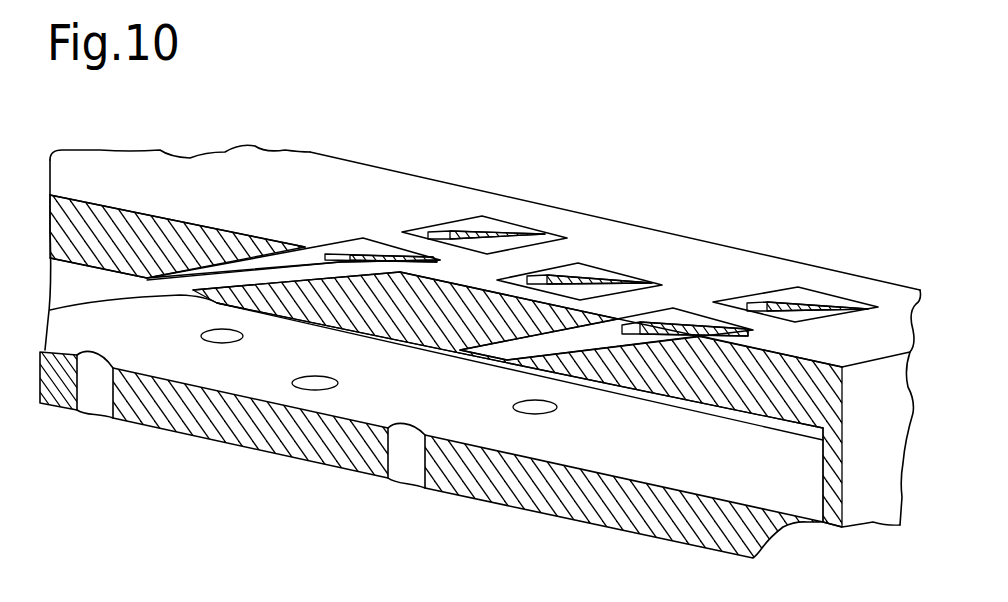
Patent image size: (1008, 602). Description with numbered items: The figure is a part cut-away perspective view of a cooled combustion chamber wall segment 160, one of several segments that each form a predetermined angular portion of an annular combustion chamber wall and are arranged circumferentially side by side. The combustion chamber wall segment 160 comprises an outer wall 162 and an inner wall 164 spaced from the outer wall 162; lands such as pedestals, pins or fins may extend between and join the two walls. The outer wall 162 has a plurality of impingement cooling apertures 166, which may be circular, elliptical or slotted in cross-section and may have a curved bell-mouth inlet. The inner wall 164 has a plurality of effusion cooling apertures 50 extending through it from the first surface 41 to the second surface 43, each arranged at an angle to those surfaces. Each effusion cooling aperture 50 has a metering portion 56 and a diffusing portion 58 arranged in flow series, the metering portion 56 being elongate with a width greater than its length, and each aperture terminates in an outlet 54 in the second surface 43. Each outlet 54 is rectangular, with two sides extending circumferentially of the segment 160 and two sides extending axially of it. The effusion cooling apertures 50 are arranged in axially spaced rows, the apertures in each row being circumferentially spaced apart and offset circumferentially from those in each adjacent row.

The combustion chamber wall segment 160 is at (786, 258).
The inner wall 164 is at (627, 237).
The outer wall 162 is at (522, 488).
The impingement cooling apertures 166 is at (217, 343).
The first surface 41 is at (393, 332).
The second surface 43 is at (697, 247).
The effusion cooling apertures 50 is at (588, 273).
The outlet 54 is at (480, 220).
The metering portion 56 is at (278, 286).
The diffusing portion 58 is at (350, 255).